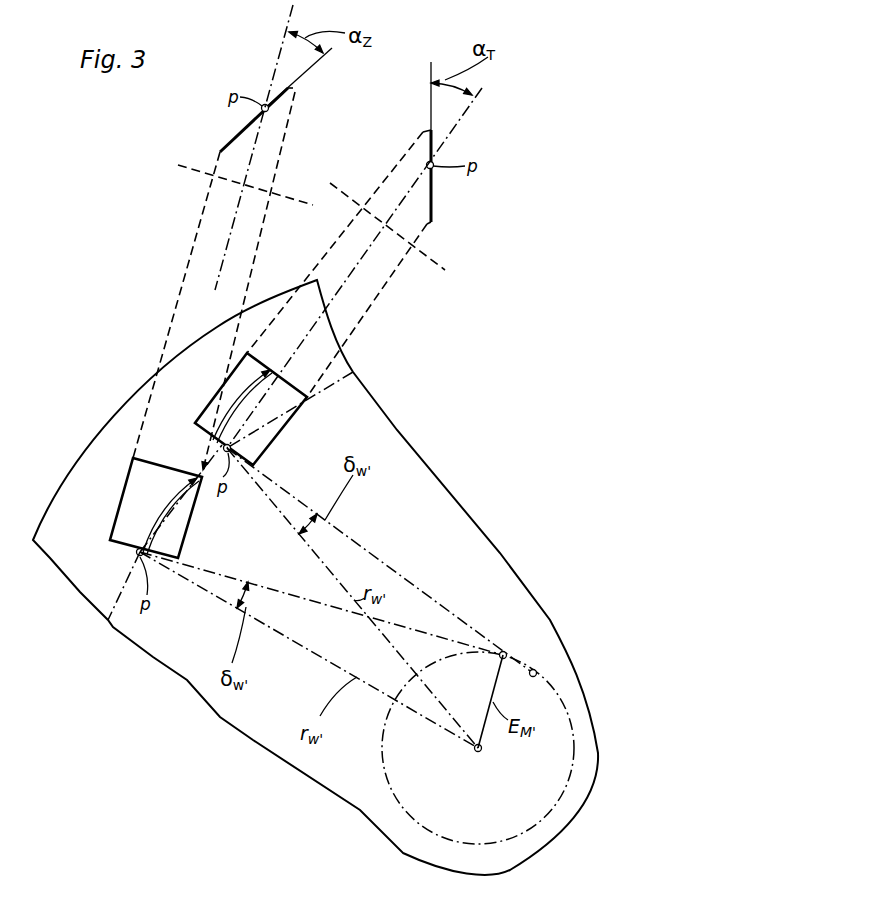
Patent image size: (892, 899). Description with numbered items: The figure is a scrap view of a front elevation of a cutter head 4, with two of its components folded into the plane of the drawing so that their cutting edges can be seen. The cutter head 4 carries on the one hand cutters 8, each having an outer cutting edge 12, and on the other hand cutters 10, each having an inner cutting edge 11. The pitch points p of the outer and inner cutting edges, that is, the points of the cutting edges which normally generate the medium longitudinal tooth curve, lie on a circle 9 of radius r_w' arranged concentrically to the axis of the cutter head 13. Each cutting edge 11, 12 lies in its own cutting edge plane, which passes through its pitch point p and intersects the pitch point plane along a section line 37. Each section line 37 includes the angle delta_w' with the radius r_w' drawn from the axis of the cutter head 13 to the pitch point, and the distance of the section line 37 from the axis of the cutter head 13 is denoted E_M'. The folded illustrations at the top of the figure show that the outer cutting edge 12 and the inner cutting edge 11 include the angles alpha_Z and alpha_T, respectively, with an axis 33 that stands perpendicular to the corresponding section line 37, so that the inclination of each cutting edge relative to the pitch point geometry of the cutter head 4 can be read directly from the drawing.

The cutter head 4 is at (95, 457).
The cutters 8 is at (127, 520).
The circle 9 is at (125, 582).
The cutters 10 is at (270, 393).
The inner cutting edge 11 is at (432, 200).
The outer cutting edge 12 is at (222, 147).
The axis of the cutter head 13 is at (479, 755).
The axis 33 is at (273, 72).
The section line 37 is at (272, 585).